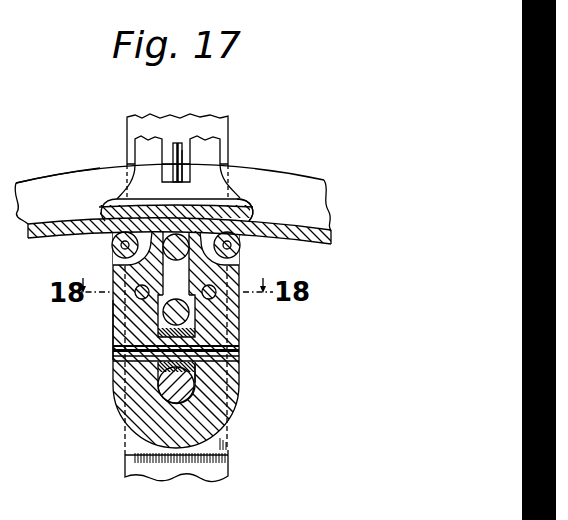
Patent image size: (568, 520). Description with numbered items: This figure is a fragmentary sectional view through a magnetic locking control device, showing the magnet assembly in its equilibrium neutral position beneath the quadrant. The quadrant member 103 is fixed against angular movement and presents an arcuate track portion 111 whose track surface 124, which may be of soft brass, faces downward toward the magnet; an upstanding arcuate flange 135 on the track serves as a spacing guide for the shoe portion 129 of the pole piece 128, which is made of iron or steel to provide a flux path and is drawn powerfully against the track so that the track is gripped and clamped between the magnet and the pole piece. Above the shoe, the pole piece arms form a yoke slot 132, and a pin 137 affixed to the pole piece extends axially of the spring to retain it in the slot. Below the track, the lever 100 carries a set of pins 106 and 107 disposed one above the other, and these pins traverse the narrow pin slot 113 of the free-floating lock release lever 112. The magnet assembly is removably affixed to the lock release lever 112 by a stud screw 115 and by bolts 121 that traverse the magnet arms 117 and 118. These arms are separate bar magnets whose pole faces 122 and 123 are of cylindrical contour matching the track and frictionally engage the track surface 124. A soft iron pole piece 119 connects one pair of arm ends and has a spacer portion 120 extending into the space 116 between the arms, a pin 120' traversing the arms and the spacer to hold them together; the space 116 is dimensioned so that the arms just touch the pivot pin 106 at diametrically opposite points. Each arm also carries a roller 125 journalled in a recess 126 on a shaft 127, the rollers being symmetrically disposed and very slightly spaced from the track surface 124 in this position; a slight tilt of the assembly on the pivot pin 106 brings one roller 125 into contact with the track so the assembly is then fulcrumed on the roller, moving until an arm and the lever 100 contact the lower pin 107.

The lever 100 is at (220, 468).
The quadrant member 103 is at (327, 181).
The pin 106 is at (168, 242).
The pin 107 is at (226, 347).
The arcuate track portion 111 is at (332, 240).
The lock release lever 112 is at (222, 452).
The pin slot 113 is at (112, 349).
The stud screw 115 is at (162, 393).
The space 116 is at (178, 263).
The magnet arm 117 is at (133, 327).
The magnet arm 118 is at (224, 320).
The pole piece 119 is at (214, 420).
The spacer portion 120 is at (142, 382).
The pin 120' is at (249, 385).
The bolts 121 is at (140, 300).
The pole face 122 is at (160, 218).
The pole face 123 is at (195, 212).
The track surface 124 is at (331, 232).
The roller 125 is at (100, 235).
The recess 126 is at (115, 268).
The shaft 127 is at (110, 250).
The pole piece 128 is at (132, 152).
The shoe portion 129 is at (236, 200).
The yoke slot 132 is at (188, 154).
The arcuate flange 135 is at (34, 188).
The pin 137 is at (180, 143).